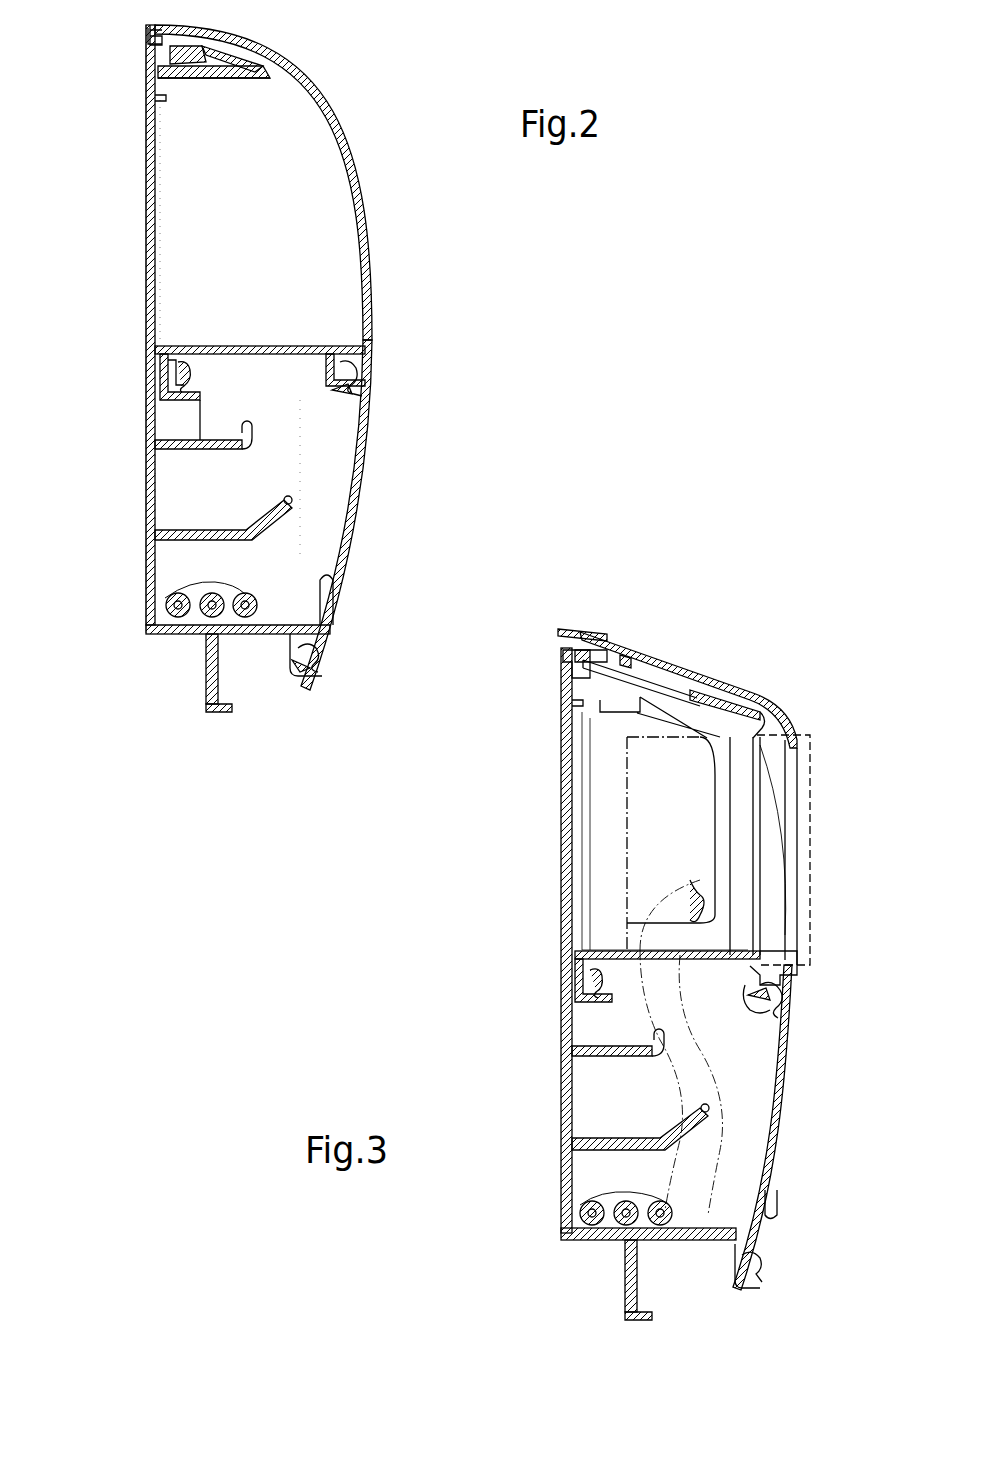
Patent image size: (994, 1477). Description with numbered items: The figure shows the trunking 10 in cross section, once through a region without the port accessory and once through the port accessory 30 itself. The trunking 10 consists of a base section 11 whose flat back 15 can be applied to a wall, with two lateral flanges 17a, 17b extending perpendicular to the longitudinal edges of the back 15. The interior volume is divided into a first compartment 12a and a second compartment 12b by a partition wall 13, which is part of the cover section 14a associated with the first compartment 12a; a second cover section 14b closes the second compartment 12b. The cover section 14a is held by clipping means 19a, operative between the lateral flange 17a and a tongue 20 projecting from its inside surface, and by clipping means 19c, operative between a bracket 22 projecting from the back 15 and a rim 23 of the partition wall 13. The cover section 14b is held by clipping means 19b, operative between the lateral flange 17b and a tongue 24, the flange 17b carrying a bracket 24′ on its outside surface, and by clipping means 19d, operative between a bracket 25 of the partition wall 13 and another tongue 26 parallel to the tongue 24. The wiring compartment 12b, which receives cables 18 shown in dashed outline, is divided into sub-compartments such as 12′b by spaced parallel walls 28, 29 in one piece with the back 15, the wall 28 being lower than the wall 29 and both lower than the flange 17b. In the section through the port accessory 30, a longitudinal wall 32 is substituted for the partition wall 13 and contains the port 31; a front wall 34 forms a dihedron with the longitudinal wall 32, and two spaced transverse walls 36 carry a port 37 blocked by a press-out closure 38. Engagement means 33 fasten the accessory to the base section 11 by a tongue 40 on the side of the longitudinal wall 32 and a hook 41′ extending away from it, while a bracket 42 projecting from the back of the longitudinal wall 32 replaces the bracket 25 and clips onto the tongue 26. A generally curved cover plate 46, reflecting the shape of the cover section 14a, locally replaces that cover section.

In FIG. 2, the trunking 10 is at (138, 690).
In FIG. 3, the trunking 10 is at (572, 1256).
In FIG. 2, the base section 11 is at (138, 602).
In FIG. 3, the base section 11 is at (552, 828).
In FIG. 2, the first compartment 12a is at (318, 200).
In FIG. 3, the first compartment 12a is at (654, 775).
In FIG. 2, the second compartment 12b is at (327, 468).
In FIG. 3, the second compartment 12b is at (755, 1115).
In FIG. 2, the sub-compartment 12′b is at (178, 418).
In FIG. 2, the partition wall 13 is at (310, 344).
In FIG. 2, the cover section 14a is at (342, 108).
In FIG. 2, the cover section 14b is at (366, 546).
In FIG. 3, the cover section 14b is at (768, 1232).
In FIG. 2, the back 15 is at (148, 310).
In FIG. 3, the back 15 is at (562, 892).
In FIG. 2, the lateral flange 17a is at (150, 38).
In FIG. 3, the lateral flange 17a is at (576, 629).
In FIG. 2, the lateral flange 17b is at (244, 636).
In FIG. 2, the electrical conductors or cables 18 is at (240, 594).
In FIG. 3, the electrical conductors or cables 18 is at (665, 1236).
In FIG. 2, the clipping means 19a is at (208, 62).
In FIG. 2, the clipping means 19b is at (320, 668).
In FIG. 2, the clipping means 19c is at (202, 362).
In FIG. 2, the clipping means 19d is at (366, 378).
In FIG. 2, the tongue 20 is at (216, 80).
In FIG. 2, the bracket 22 is at (184, 396).
In FIG. 3, the bracket 22 is at (606, 980).
In FIG. 2, the rim 23 is at (166, 380).
In FIG. 2, the tongue 24 is at (324, 648).
In FIG. 2, the bracket 24′ is at (300, 678).
In FIG. 2, the bracket 25 is at (332, 372).
In FIG. 2, the tongue 26 is at (342, 392).
In FIG. 3, the tongue 26 is at (762, 1004).
In FIG. 2, the wall 28 is at (206, 450).
In FIG. 3, the wall 28 is at (608, 1056).
In FIG. 2, the wall 29 is at (200, 540).
In FIG. 3, the wall 29 is at (598, 1140).
In FIG. 3, the port accessory 30 is at (696, 690).
In FIG. 3, the port 31 is at (700, 978).
In FIG. 3, the longitudinal wall 32 is at (590, 953).
In FIG. 3, the engagement means 33 is at (626, 664).
In FIG. 3, the front wall 34 is at (772, 950).
In FIG. 3, the transverse walls 36 is at (730, 788).
In FIG. 3, the port 37 is at (712, 850).
In FIG. 3, the press-out closure 38 is at (684, 820).
In FIG. 3, the tongue 40 is at (582, 986).
In FIG. 3, the hook 41′ is at (566, 676).
In FIG. 3, the bracket 42 is at (740, 1020).
In FIG. 3, the cover plate 46 is at (782, 690).